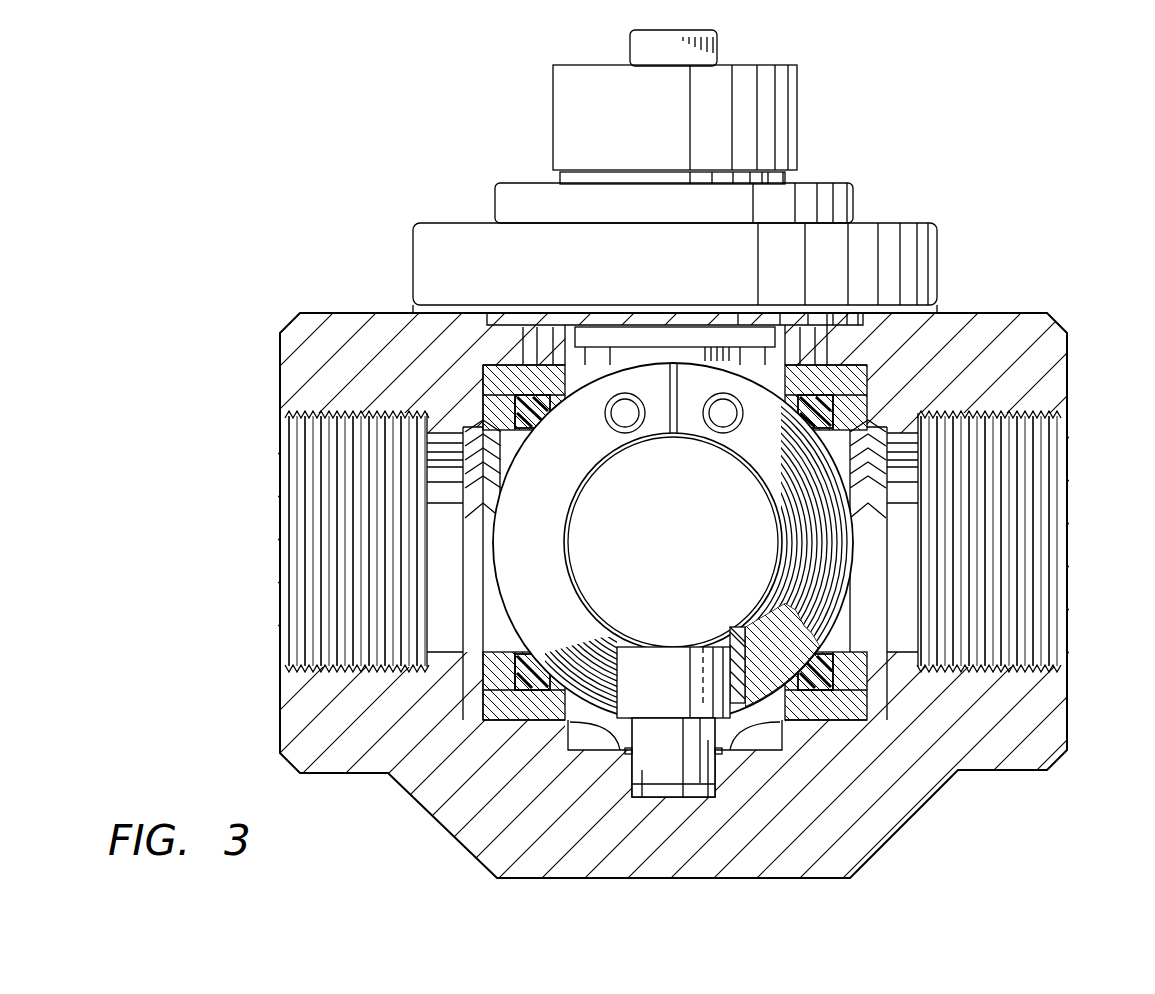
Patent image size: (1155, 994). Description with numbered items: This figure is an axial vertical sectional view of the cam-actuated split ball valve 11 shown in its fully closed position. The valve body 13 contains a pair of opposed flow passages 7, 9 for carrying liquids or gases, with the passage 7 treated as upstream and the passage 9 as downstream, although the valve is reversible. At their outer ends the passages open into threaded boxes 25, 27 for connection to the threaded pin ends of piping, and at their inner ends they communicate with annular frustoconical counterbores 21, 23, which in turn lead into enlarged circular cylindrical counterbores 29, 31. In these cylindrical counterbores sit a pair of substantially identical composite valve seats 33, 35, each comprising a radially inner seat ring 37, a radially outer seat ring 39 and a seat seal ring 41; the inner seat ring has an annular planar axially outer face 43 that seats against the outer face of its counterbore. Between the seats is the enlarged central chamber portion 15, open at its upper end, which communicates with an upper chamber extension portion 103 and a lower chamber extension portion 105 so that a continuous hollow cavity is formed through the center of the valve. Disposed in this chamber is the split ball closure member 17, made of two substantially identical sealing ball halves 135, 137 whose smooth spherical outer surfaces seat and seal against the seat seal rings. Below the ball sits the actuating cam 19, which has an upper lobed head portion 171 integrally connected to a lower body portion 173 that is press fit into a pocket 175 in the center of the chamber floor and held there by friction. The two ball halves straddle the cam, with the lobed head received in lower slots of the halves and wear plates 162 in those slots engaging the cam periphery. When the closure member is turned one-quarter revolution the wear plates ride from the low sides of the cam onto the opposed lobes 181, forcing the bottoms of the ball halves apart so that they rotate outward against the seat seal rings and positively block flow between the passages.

The cam-actuated split ball valve 11 is at (268, 150).
The body 13 is at (1012, 312).
The central chamber portion 15 is at (805, 345).
The split ball closure member 17 is at (577, 483).
The actuating cam 19 is at (677, 640).
The frustoconical counterbore 21 is at (482, 666).
The frustoconical counterbore 23 is at (873, 652).
The threaded box 25 is at (306, 668).
The threaded box 27 is at (1052, 666).
The circular cylindrical counterbore 29 is at (485, 684).
The circular cylindrical counterbore 31 is at (866, 390).
The composite valve seat 33 is at (506, 720).
The composite valve seat 35 is at (840, 720).
The radially inner seat ring 37 is at (850, 677).
The radially outer seat ring 39 is at (852, 372).
The seat seal ring 41 is at (872, 414).
The axially outer face 43 is at (484, 415).
The flow passage 7 is at (456, 554).
The flow passage 9 is at (907, 560).
The upper chamber extension portion 103 is at (545, 327).
The lower chamber extension portion 105 is at (625, 752).
The sealing ball half 135 is at (558, 541).
The sealing ball half 137 is at (757, 455).
The wear plate 162 is at (737, 660).
The lobed head portion 171 is at (657, 662).
The lower body portion 173 is at (707, 783).
The pocket 175 is at (643, 798).
The lobe 181 is at (577, 740).